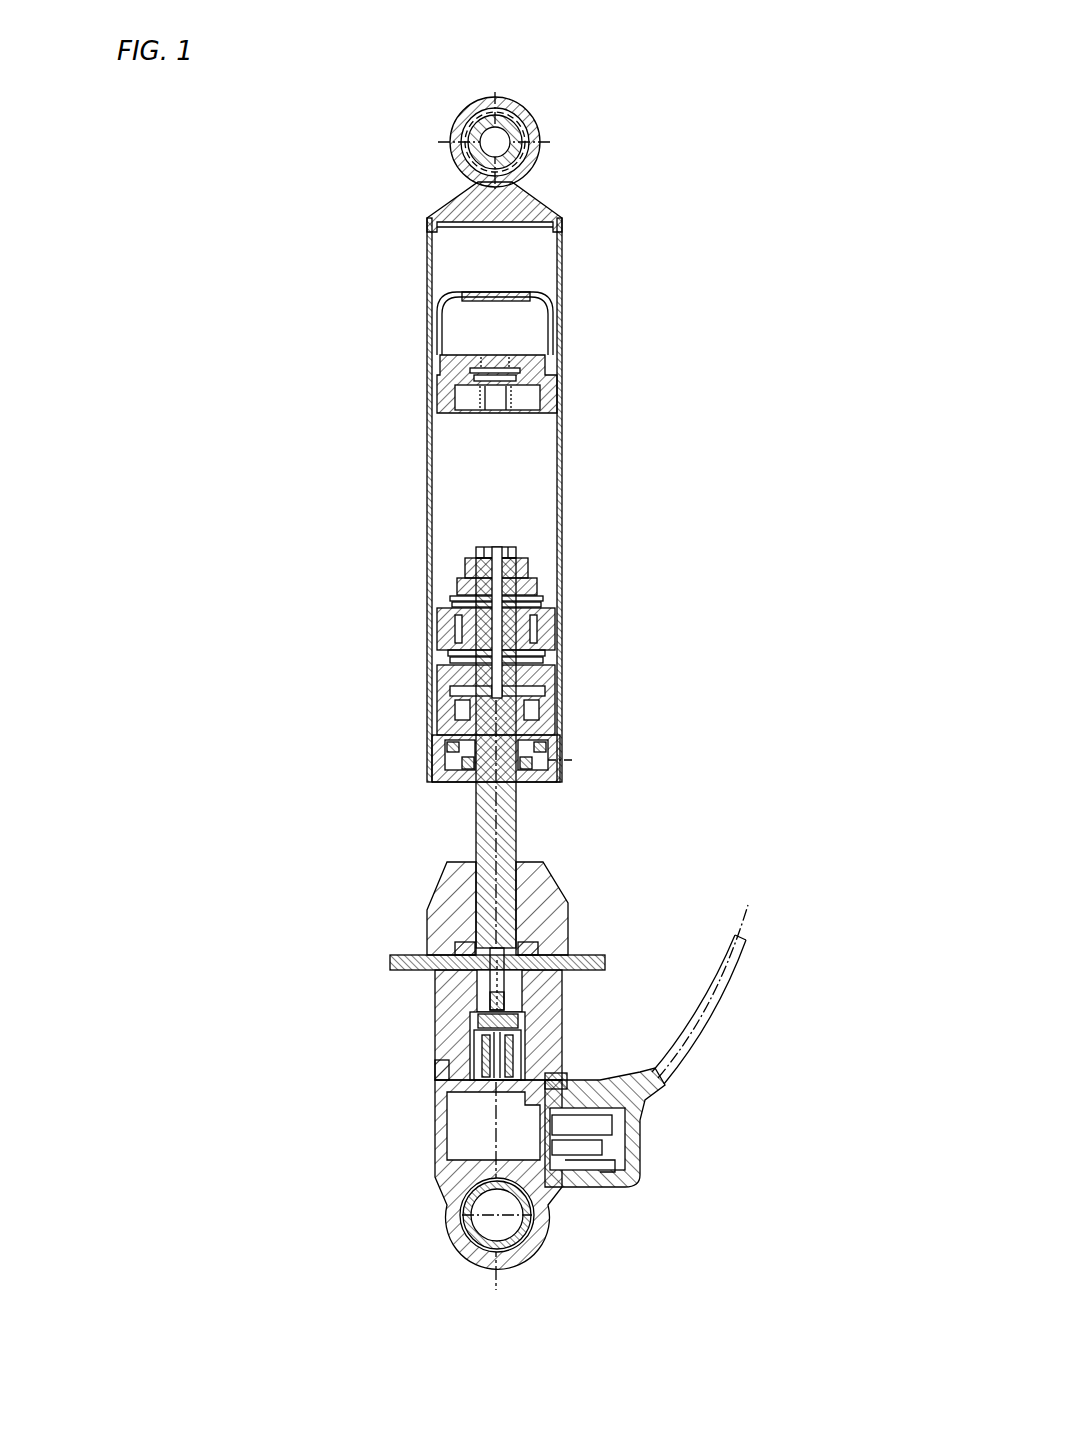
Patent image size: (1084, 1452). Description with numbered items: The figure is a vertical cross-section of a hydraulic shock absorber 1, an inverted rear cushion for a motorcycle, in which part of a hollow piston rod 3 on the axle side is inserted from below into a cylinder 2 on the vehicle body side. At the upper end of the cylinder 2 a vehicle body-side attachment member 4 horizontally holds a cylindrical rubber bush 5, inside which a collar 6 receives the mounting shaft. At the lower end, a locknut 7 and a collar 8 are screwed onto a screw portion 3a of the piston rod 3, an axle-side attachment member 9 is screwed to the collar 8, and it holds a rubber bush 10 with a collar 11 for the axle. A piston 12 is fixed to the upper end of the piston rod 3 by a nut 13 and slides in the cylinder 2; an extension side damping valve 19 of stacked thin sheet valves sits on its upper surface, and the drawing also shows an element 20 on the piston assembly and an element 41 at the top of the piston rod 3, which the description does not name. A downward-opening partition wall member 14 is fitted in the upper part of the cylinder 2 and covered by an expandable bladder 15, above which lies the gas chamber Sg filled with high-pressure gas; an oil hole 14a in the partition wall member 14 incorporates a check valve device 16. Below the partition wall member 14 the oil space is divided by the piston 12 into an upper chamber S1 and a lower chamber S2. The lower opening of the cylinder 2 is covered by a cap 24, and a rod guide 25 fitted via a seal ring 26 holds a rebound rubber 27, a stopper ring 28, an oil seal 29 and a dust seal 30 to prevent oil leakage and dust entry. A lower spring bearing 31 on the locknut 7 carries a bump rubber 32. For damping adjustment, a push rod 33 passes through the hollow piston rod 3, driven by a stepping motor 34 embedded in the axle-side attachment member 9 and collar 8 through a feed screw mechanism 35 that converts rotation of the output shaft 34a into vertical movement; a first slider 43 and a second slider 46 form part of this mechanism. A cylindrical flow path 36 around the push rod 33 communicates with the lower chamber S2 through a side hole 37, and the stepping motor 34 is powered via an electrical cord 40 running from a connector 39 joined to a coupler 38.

The hydraulic shock absorber 1 is at (606, 196).
The cylinder 2 is at (427, 456).
The piston rod 3 is at (475, 830).
The screw portion 3a is at (480, 1002).
The vehicle body-side attachment member 4 is at (454, 131).
The rubber bush 5 is at (522, 129).
The collar 6 is at (527, 162).
The locknut 7 is at (546, 946).
The collar 8 is at (437, 1030).
The axle-side attachment member 9 is at (447, 1234).
The rubber bush 10 is at (538, 1238).
The collar 11 is at (528, 1262).
The piston 12 is at (547, 614).
The nut 13 is at (520, 570).
The partition wall member 14 is at (558, 389).
The oil hole 14a is at (493, 367).
The bladder 15 is at (496, 291).
The check valve device 16 is at (501, 402).
The extension side damping valve 19 is at (450, 598).
The valve body 20 is at (470, 668).
The cap 24 is at (432, 778).
The rod guide 25 is at (558, 725).
The seal ring 26 is at (548, 705).
The rebound rubber 27 is at (528, 690).
The stopper ring 28 is at (552, 646).
The oil seal 29 is at (452, 741).
The dust seal 30 is at (548, 780).
The lower spring bearing 31 is at (400, 955).
The bump rubber 32 is at (559, 900).
The push rod 33 is at (498, 807).
The stepping motor 34 is at (460, 1141).
The output shaft 34a is at (522, 1052).
The feed screw mechanism 35 is at (527, 1040).
The flow path 36 is at (506, 642).
The side hole 37 is at (456, 700).
The coupler 38 is at (572, 1090).
The connector 39 is at (613, 1161).
The electrical cord 40 is at (690, 1029).
The nut 41 is at (492, 545).
The first slider 43 is at (445, 1065).
The second slider 46 is at (532, 1016).
The gas chamber Sg is at (548, 268).
The upper chamber S1 is at (550, 474).
The lower chamber S2 is at (435, 652).